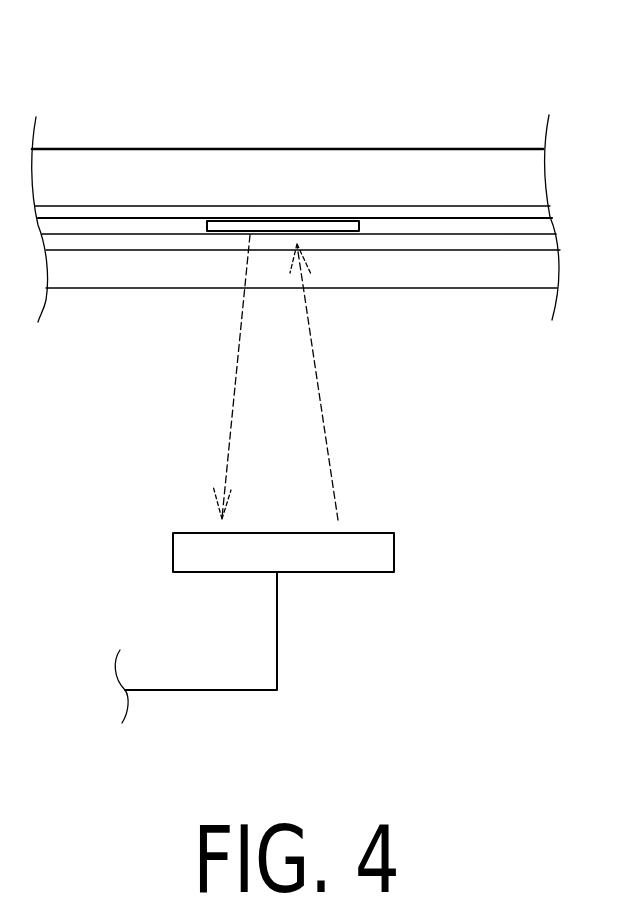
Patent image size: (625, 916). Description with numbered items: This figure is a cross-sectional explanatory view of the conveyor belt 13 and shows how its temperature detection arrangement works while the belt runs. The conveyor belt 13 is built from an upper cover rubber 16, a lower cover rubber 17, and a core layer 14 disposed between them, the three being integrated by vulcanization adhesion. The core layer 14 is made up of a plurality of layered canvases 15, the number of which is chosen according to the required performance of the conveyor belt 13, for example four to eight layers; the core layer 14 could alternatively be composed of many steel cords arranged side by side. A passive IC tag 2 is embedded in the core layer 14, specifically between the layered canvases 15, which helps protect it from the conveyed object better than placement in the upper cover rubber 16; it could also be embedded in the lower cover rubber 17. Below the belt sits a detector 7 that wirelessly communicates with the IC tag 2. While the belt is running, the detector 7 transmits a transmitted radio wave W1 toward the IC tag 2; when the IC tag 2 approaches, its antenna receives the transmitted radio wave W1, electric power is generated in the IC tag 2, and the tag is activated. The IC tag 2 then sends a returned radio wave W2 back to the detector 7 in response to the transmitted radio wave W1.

The passive IC tag 2 is at (266, 221).
The detector 7 is at (315, 560).
The conveyor belt 13 is at (318, 146).
The core layer 14 is at (483, 207).
The canvas 15 is at (70, 204).
The upper cover rubber 16 is at (403, 162).
The lower cover rubber 17 is at (445, 273).
The transmitted radio wave W1 is at (332, 382).
The returned radio wave W2 is at (221, 377).